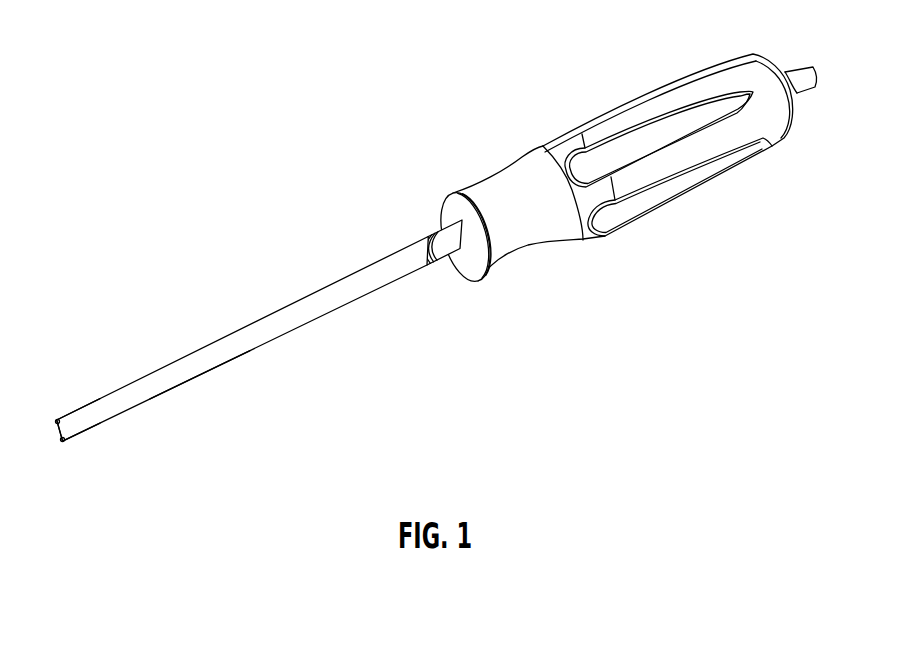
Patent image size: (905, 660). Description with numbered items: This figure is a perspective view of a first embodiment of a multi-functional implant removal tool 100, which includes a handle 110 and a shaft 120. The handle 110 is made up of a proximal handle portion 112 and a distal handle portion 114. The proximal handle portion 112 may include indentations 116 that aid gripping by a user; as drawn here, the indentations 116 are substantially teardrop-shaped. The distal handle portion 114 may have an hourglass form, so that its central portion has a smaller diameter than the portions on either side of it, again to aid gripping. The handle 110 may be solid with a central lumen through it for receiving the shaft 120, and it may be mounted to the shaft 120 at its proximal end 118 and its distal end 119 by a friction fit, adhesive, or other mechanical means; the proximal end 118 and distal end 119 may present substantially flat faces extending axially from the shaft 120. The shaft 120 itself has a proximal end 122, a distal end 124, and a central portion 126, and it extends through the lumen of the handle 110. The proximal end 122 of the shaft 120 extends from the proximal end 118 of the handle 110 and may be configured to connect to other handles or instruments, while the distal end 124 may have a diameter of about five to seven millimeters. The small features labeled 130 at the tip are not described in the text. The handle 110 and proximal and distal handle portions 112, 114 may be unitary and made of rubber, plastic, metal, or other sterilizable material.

The multi-functional implant removal tool 100 is at (446, 258).
The handle 110 is at (647, 171).
The proximal handle portion 112 is at (776, 120).
The distal handle portion 114 is at (528, 228).
The indentations 116 is at (656, 193).
The proximal end 118 is at (805, 115).
The distal end 119 is at (475, 258).
The shaft 120 is at (224, 376).
The proximal end 122 is at (803, 64).
The distal end 124 is at (97, 390).
The central portion 126 is at (217, 371).
The tip edges 130 is at (55, 421).